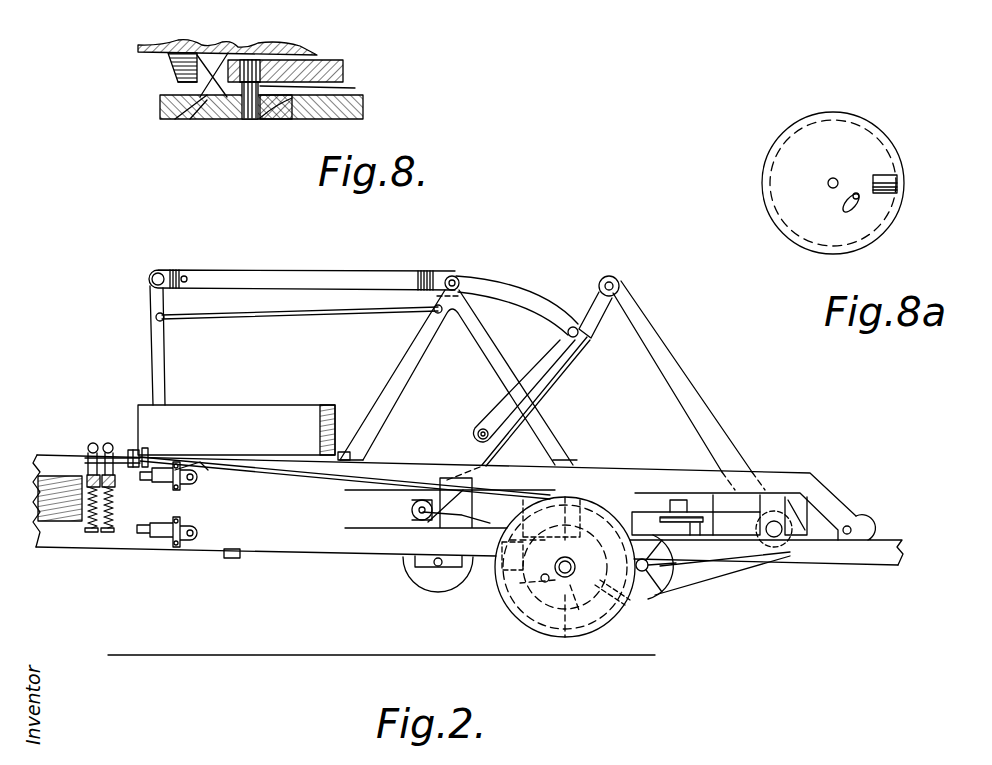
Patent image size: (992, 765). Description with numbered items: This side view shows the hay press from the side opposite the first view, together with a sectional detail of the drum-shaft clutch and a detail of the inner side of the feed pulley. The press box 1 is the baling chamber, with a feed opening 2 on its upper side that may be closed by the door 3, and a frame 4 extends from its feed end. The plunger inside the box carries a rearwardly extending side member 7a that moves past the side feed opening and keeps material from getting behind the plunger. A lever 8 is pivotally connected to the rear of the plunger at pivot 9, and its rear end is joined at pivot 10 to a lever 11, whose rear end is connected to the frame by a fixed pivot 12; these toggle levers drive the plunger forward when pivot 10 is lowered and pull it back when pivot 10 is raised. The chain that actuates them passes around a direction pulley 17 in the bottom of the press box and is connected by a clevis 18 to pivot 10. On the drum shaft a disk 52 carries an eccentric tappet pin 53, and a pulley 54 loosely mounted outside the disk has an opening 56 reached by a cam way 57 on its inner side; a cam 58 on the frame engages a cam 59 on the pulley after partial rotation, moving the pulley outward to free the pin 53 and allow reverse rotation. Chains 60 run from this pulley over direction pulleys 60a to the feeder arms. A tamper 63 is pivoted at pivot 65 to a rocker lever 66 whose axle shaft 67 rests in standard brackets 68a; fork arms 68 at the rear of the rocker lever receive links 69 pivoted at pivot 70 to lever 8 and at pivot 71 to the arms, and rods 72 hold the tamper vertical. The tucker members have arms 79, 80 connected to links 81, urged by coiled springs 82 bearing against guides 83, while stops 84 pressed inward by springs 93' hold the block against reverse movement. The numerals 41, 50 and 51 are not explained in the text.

In FIG. 2, the press box 1 is at (245, 517).
In FIG. 2, the feed opening 2 is at (300, 475).
In FIG. 2, the door 3 is at (197, 465).
In FIG. 8, the frame 4 is at (278, 45).
In FIG. 2, the frame 4 is at (358, 554).
In FIG. 2, the side member 7a is at (468, 507).
In FIG. 2, the lever 8 is at (472, 449).
In FIG. 2, the pivot 9 is at (417, 521).
In FIG. 2, the pivot 10 is at (621, 284).
In FIG. 2, the lever 11 is at (683, 385).
In FIG. 2, the fixed pivot 12 is at (776, 538).
In FIG. 2, the direction pulley 17 is at (440, 590).
In FIG. 2, the clevis 18 is at (598, 328).
In FIG. 2, the belt 41 is at (713, 577).
In FIG. 2, the box 50 is at (236, 417).
In FIG. 2, the box end plate 51 is at (223, 412).
In FIG. 8, the disk 52 is at (343, 72).
In FIG. 2, the disk 52 is at (623, 603).
In FIG. 8, the tappet pin 53 is at (323, 86).
In FIG. 2, the tappet pin 53 is at (543, 583).
In FIG. 8, the pulley 54 is at (320, 114).
In FIG. 8A, the pulley 54 is at (878, 206).
In FIG. 2, the pulley 54 is at (625, 630).
In FIG. 8, the opening 56 is at (248, 119).
In FIG. 8A, the opening 56 is at (852, 190).
In FIG. 8, the cam way 57 is at (283, 115).
In FIG. 8A, the cam way 57 is at (849, 202).
In FIG. 8, the cam 58 is at (172, 70).
In FIG. 2, the cam 58 is at (497, 542).
In FIG. 8, the cam 59 is at (192, 110).
In FIG. 8A, the cam 59 is at (897, 176).
In FIG. 2, the cam 59 is at (551, 520).
In FIG. 2, the chains 60 is at (342, 483).
In FIG. 2, the direction pulleys 60a is at (344, 450).
In FIG. 2, the tamper 63 is at (152, 353).
In FIG. 2, the pivot 65 is at (162, 273).
In FIG. 2, the rocker lever 66 is at (318, 272).
In FIG. 2, the axle shaft 67 is at (457, 274).
In FIG. 2, the fork arms 68 is at (550, 308).
In FIG. 2, the standard brackets 68a is at (483, 338).
In FIG. 2, the links 69 is at (540, 365).
In FIG. 2, the pivot 70 is at (481, 430).
In FIG. 2, the pivot 71 is at (567, 332).
In FIG. 2, the rods 72 is at (310, 313).
In FIG. 2, the arm 79 is at (108, 447).
In FIG. 2, the arm 80 is at (90, 448).
In FIG. 2, the links 81 is at (88, 468).
In FIG. 2, the coiled springs 82 is at (112, 500).
In FIG. 2, the guides 83 is at (112, 478).
In FIG. 2, the stops 84 is at (147, 472).
In FIG. 2, the springs 93' is at (188, 504).